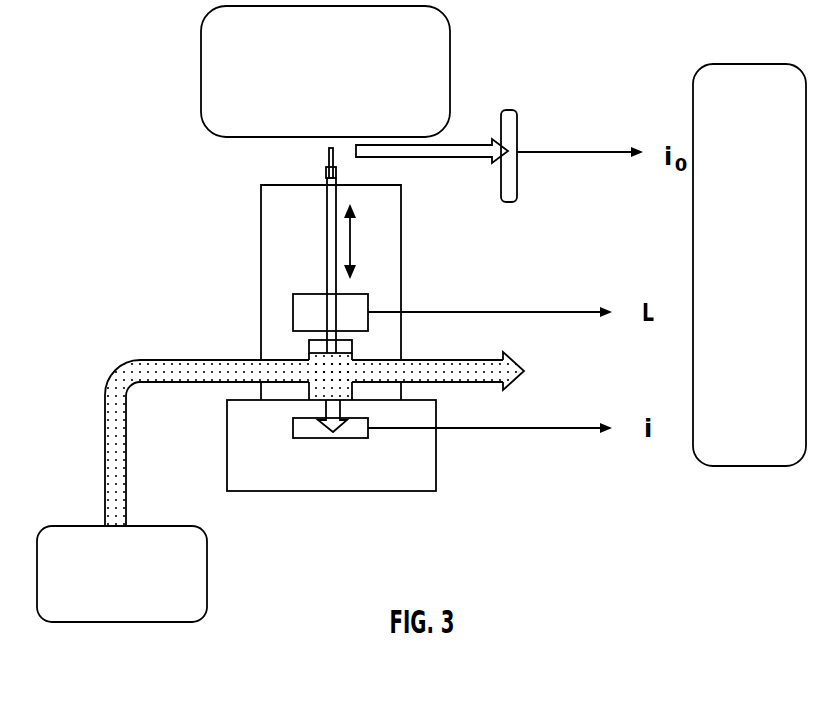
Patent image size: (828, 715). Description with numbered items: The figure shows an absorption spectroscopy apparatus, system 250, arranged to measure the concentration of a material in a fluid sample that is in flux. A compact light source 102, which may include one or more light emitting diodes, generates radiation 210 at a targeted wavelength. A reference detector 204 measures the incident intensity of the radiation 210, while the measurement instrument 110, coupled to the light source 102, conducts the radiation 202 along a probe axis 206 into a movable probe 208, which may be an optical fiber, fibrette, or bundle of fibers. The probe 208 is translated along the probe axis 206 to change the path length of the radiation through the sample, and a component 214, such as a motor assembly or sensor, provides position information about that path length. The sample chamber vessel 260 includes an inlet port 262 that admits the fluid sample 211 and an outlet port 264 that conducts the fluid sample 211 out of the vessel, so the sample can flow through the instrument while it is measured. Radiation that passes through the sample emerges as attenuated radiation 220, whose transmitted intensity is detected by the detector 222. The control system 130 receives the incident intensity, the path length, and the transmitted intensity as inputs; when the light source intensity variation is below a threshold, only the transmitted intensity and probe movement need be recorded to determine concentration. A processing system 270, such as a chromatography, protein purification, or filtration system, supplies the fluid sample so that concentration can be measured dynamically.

The compact light source 102 is at (207, 62).
The measurement instrument 110 is at (401, 290).
The control system 130 is at (734, 277).
The radiation 202 is at (325, 152).
The reference detector 204 is at (517, 192).
The probe axis 206 is at (352, 243).
The movable probe 208 is at (322, 240).
The radiation 210 is at (455, 160).
The fluid sample 211 is at (175, 372).
The component 214 is at (287, 310).
The attenuated radiation 220 is at (326, 410).
The detector 222 is at (300, 427).
The system 250 is at (441, 540).
The sample chamber vessel 260 is at (353, 349).
The inlet port 262 is at (300, 368).
The outlet port 264 is at (375, 371).
The processing system 270 is at (106, 591).